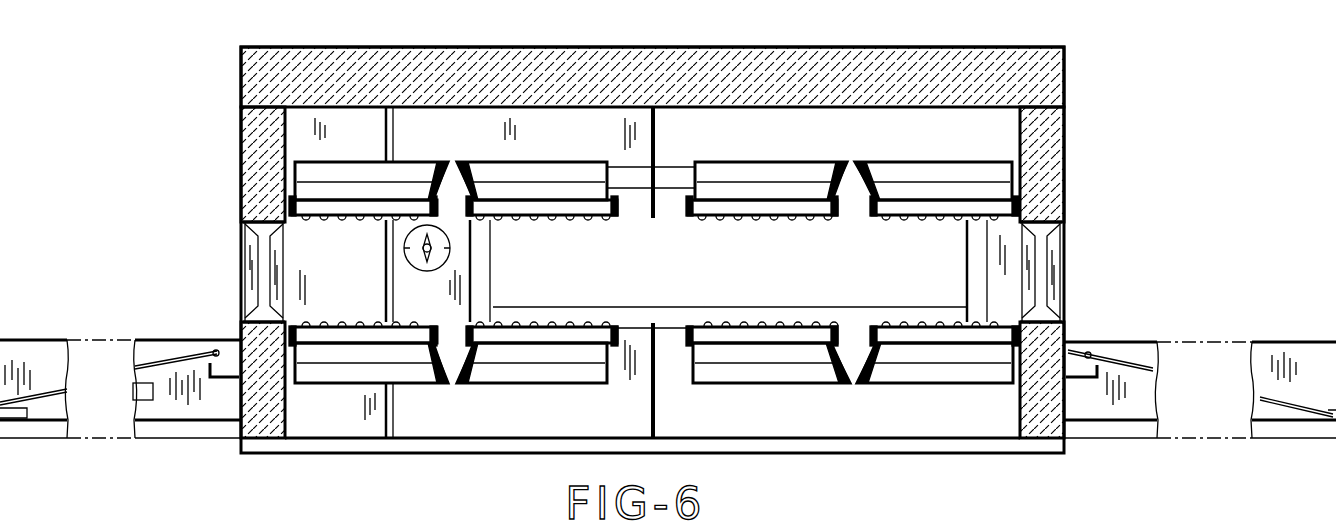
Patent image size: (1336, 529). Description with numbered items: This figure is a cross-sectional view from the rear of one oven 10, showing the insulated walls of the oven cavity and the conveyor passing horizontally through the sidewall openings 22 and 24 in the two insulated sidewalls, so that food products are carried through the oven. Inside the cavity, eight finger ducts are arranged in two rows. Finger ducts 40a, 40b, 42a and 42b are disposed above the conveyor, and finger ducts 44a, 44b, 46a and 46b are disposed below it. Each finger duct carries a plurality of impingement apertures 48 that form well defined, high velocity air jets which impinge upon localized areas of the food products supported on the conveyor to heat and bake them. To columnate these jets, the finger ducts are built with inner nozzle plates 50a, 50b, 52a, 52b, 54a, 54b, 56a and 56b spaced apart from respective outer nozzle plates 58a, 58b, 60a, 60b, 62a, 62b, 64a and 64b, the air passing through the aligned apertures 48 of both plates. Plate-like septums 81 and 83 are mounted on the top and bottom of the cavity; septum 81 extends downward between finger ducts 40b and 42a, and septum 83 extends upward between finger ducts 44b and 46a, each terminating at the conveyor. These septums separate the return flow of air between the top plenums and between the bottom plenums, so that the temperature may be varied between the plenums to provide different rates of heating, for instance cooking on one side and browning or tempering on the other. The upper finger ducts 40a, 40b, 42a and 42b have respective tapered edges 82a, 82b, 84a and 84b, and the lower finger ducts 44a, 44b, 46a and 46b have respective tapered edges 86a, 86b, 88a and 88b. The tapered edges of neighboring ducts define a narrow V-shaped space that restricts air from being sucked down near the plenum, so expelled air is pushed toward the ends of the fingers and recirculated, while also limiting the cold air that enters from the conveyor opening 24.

The oven 10 is at (1092, 94).
The sidewall opening 22 is at (1055, 252).
The sidewall opening 24 is at (248, 252).
The finger duct 40a is at (950, 172).
The finger duct 40b is at (768, 172).
The finger duct 42a is at (565, 172).
The finger duct 42b is at (390, 170).
The finger duct 44a is at (958, 372).
The finger duct 44b is at (753, 372).
The finger duct 46a is at (565, 372).
The finger duct 46b is at (346, 372).
The impingement apertures 48 is at (577, 219).
The inner nozzle plate 50a is at (905, 217).
The inner nozzle plate 50b is at (723, 217).
The inner nozzle plate 52a is at (548, 218).
The inner nozzle plate 52b is at (330, 218).
The inner nozzle plate 54a is at (897, 330).
The inner nozzle plate 54b is at (818, 330).
The inner nozzle plate 56a is at (566, 328).
The inner nozzle plate 56b is at (355, 324).
The outer nozzle plate 58a is at (948, 218).
The outer nozzle plate 58b is at (788, 218).
The outer nozzle plate 60a is at (497, 222).
The outer nozzle plate 60b is at (370, 220).
The outer nozzle plate 62a is at (946, 325).
The outer nozzle plate 62b is at (716, 325).
The outer nozzle plate 64a is at (497, 326).
The outer nozzle plate 64b is at (404, 326).
The septum 81 is at (656, 148).
The tapered edge 82a is at (880, 162).
The tapered edge 82b is at (824, 162).
The septum 83 is at (657, 397).
The tapered edge 84a is at (478, 160).
The tapered edge 84b is at (426, 160).
The tapered edge 86a is at (876, 372).
The tapered edge 86b is at (832, 372).
The tapered edge 88a is at (475, 372).
The tapered edge 88b is at (437, 372).